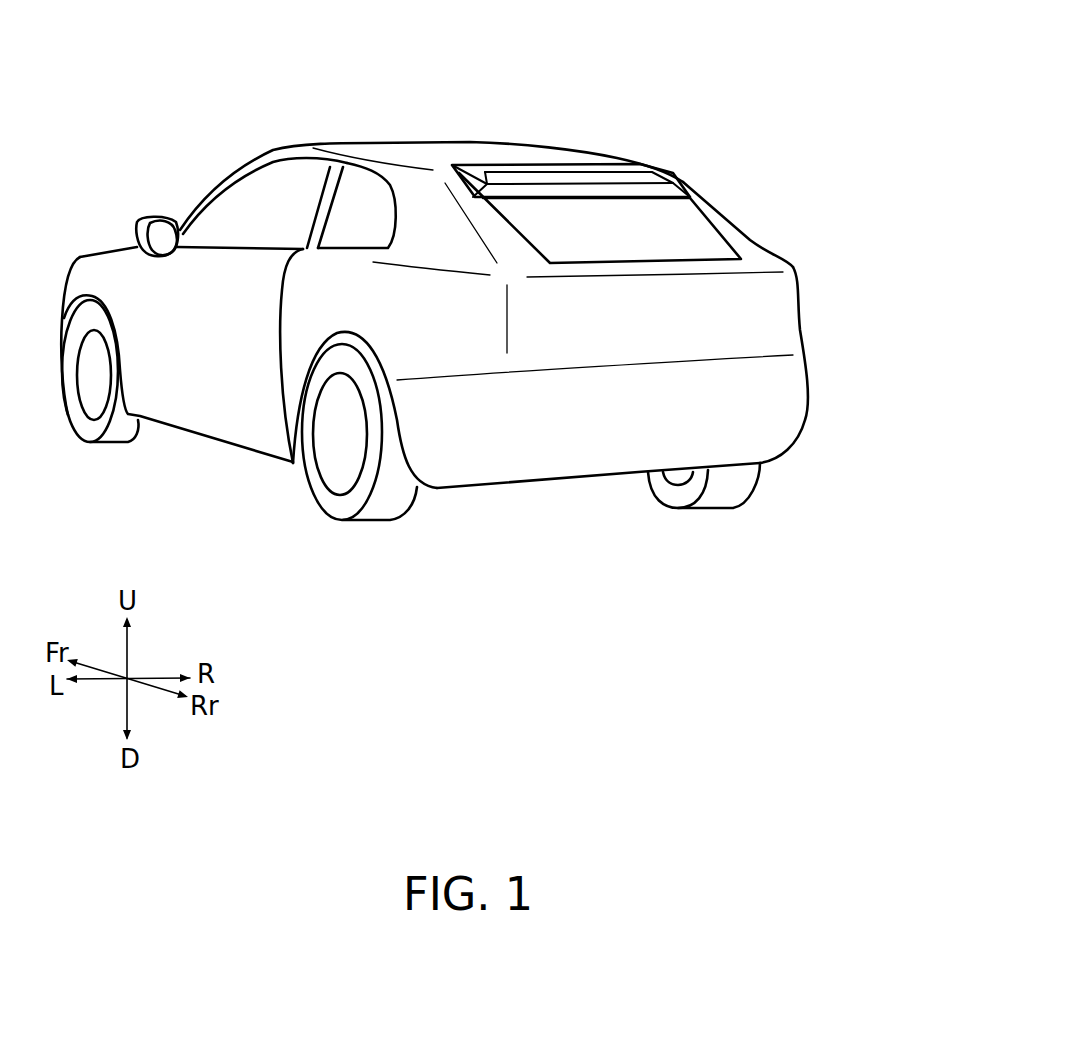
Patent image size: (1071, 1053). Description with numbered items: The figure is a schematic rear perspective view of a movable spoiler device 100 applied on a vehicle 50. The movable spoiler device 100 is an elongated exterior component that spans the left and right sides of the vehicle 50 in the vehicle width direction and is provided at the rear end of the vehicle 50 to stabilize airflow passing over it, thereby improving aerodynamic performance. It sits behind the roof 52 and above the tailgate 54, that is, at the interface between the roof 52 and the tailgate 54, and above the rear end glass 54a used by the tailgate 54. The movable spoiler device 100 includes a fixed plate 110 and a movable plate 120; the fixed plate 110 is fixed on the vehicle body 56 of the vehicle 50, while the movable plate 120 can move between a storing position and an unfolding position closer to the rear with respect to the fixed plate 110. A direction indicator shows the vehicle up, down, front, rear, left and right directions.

The movable spoiler device 100 is at (495, 261).
The vehicle 50 is at (495, 290).
The roof 52 is at (523, 145).
The tailgate 54 is at (655, 220).
The rear end glass 54a is at (695, 218).
The vehicle body 56 is at (455, 192).
The fixed plate 110 is at (595, 144).
The movable plate 120 is at (640, 160).